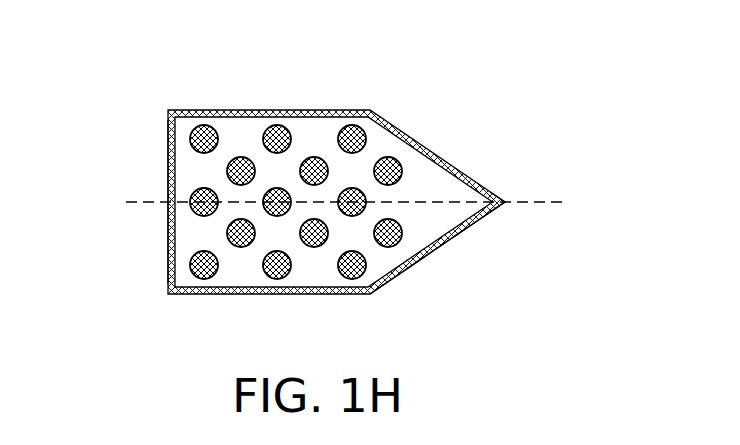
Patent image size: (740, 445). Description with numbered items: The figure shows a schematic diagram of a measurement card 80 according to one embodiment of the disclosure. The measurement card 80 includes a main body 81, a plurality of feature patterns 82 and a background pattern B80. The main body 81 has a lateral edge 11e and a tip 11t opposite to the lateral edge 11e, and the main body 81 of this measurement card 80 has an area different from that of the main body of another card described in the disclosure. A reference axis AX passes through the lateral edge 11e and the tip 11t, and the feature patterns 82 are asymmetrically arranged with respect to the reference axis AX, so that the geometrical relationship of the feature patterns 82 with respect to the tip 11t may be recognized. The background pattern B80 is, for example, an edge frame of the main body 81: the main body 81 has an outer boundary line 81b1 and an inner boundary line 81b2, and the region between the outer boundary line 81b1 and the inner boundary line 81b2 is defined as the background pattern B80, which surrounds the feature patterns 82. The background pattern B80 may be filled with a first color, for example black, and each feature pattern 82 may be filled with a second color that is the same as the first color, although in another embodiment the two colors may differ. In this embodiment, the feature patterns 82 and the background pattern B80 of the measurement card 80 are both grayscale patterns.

The measurement card 80 is at (335, 183).
The main body 81 is at (314, 138).
The feature patterns 82 is at (366, 138).
The lateral edge 11e is at (168, 141).
The tip 11t is at (506, 200).
The outer boundary line 81b1 is at (480, 218).
The inner boundary line 81b2 is at (438, 247).
The background pattern B80 is at (407, 270).
The reference axis AX is at (364, 202).